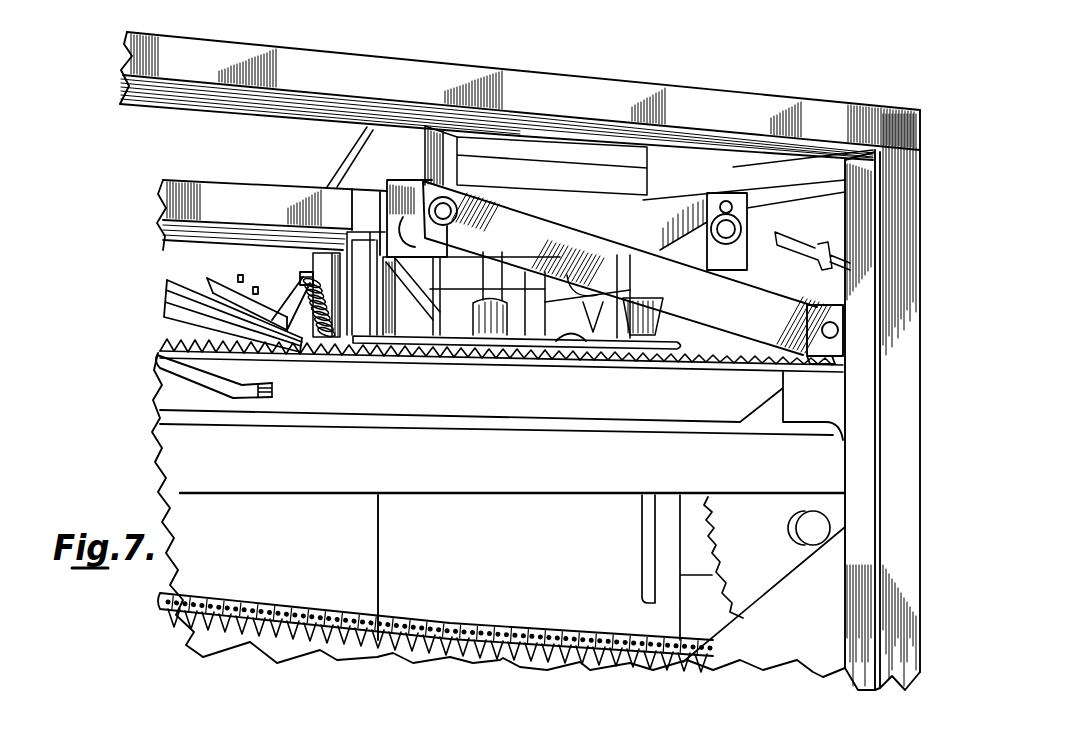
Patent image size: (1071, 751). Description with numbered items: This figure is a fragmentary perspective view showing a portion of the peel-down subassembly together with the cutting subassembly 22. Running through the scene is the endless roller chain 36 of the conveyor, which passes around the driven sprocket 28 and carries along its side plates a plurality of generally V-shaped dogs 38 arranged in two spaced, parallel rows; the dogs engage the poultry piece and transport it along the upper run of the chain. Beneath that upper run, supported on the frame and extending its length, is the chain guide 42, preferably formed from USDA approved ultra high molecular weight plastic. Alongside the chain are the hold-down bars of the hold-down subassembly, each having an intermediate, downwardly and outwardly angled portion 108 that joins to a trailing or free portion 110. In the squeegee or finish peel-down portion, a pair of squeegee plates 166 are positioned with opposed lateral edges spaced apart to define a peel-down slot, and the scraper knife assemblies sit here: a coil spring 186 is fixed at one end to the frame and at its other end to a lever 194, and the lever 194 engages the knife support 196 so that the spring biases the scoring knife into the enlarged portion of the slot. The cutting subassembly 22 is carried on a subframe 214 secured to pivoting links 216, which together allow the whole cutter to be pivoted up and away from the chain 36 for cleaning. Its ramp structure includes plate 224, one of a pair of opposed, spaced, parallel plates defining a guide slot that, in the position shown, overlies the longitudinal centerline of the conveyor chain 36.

The cutting subassembly 22 is at (532, 103).
The subframe 214 is at (422, 165).
The pivoting links 216 is at (623, 260).
The knife support 196 is at (217, 278).
The lever 194 is at (287, 313).
The squeegee plates 166 is at (242, 327).
The coil spring 186 is at (320, 335).
The angled portion 108 is at (202, 373).
The trailing portion 110 is at (260, 392).
The chain guide 42 is at (472, 399).
The plate 224 is at (586, 342).
The endless roller chain 36 is at (420, 610).
The dogs 38 is at (466, 630).
The driven sprocket 28 is at (755, 541).